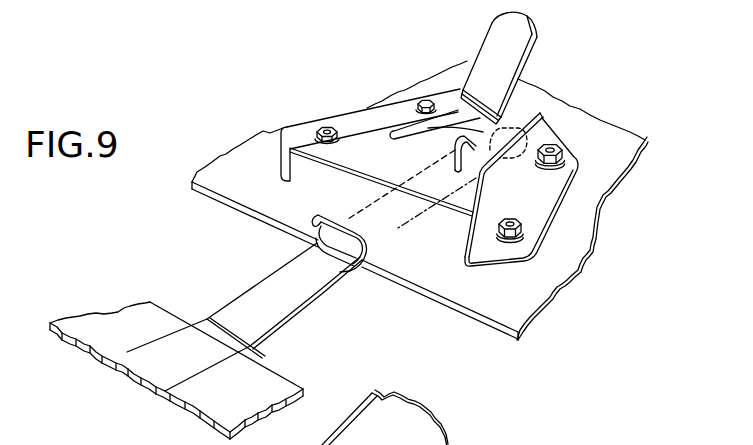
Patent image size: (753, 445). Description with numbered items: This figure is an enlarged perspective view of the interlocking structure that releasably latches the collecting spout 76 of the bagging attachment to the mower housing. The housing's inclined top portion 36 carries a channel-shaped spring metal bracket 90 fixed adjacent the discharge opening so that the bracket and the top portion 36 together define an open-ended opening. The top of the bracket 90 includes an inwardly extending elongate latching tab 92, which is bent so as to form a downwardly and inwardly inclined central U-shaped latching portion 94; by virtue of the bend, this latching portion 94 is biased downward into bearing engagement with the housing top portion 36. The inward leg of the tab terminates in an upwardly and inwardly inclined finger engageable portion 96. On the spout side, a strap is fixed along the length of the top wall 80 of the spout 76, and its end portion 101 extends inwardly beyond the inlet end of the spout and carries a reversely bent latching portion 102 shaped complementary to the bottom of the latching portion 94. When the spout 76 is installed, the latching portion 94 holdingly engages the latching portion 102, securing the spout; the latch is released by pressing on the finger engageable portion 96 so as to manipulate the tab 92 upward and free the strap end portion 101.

The top portion 36 is at (622, 138).
The channel-shaped spring metal bracket 90 is at (350, 103).
The latching tab 92 is at (498, 62).
The finger engageable portion 96 is at (522, 33).
The U-shaped latching portion 94 is at (453, 148).
The end portion 101 is at (270, 288).
The reversely bent latching portion 102 is at (367, 253).
The collecting spout 76 is at (150, 302).
The top wall 80 is at (207, 395).